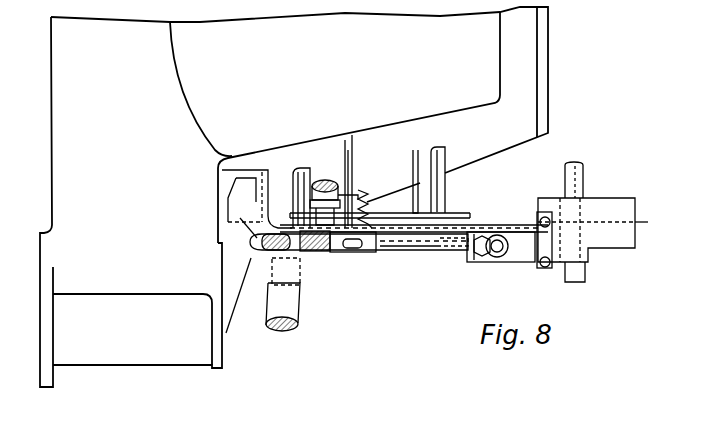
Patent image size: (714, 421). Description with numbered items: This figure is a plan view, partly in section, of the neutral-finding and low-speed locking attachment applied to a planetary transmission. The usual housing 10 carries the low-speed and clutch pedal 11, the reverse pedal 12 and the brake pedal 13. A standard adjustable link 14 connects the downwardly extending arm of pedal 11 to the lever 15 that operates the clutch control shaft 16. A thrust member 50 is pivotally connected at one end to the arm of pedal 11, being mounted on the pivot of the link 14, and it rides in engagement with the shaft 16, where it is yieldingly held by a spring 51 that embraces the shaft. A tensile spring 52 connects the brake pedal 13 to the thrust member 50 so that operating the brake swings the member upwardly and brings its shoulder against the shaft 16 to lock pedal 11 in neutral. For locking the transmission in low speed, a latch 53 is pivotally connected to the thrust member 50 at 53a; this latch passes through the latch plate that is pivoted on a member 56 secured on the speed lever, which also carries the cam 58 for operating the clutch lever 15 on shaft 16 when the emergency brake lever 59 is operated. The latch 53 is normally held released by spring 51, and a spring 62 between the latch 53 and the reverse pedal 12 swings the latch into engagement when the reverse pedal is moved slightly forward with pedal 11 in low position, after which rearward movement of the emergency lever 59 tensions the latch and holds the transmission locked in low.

The housing 10 is at (136, 352).
The low-speed and clutch pedal 11 is at (290, 310).
The reverse pedal 12 is at (257, 251).
The brake pedal 13 is at (351, 188).
The adjustable link 14 is at (311, 251).
The lever 15 is at (409, 247).
The clutch control shaft 16 is at (436, 205).
The thrust member 50 is at (268, 275).
The spring 51 is at (456, 222).
The tensile spring 52 is at (371, 204).
The latch 53 is at (538, 220).
The pivotal connection 53a is at (380, 208).
The member 56 is at (612, 204).
The cam 58 is at (518, 256).
The emergency brake lever 59 is at (583, 187).
The spring 62 is at (351, 252).